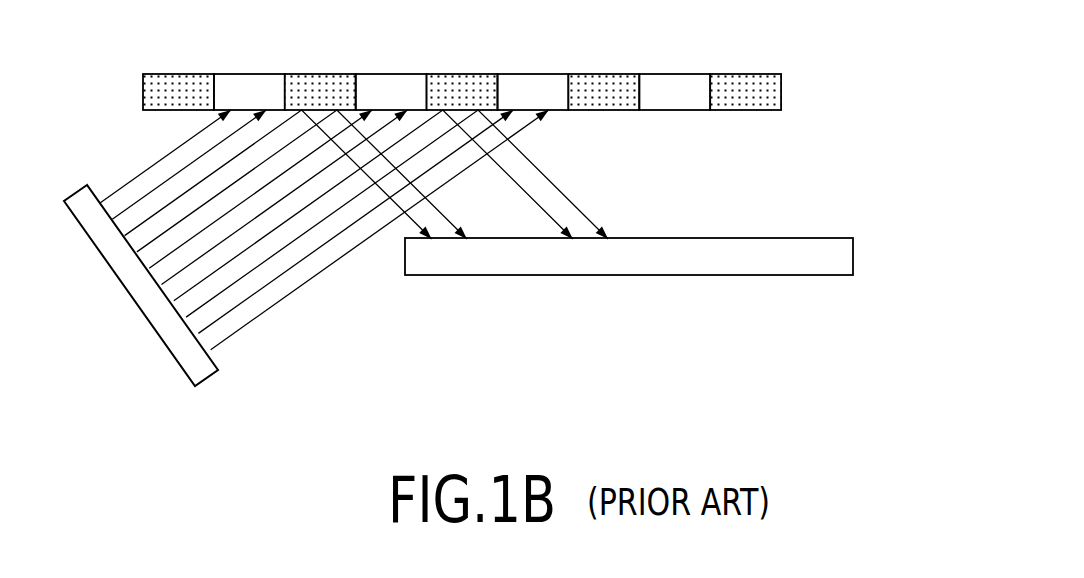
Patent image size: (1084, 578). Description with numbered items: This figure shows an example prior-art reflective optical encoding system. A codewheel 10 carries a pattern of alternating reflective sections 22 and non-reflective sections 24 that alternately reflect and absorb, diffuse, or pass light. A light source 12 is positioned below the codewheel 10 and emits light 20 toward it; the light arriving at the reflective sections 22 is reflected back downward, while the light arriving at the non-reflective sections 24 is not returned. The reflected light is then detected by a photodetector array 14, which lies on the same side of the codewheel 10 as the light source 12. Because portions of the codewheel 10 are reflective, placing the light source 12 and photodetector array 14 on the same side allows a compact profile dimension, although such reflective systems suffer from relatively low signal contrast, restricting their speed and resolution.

The codewheel 10 is at (515, 85).
The light source 12 is at (208, 380).
The photodetector array 14 is at (847, 258).
The light beams 20 is at (158, 162).
The reflective sections 22 is at (735, 83).
The non-reflective sections 24 is at (677, 102).